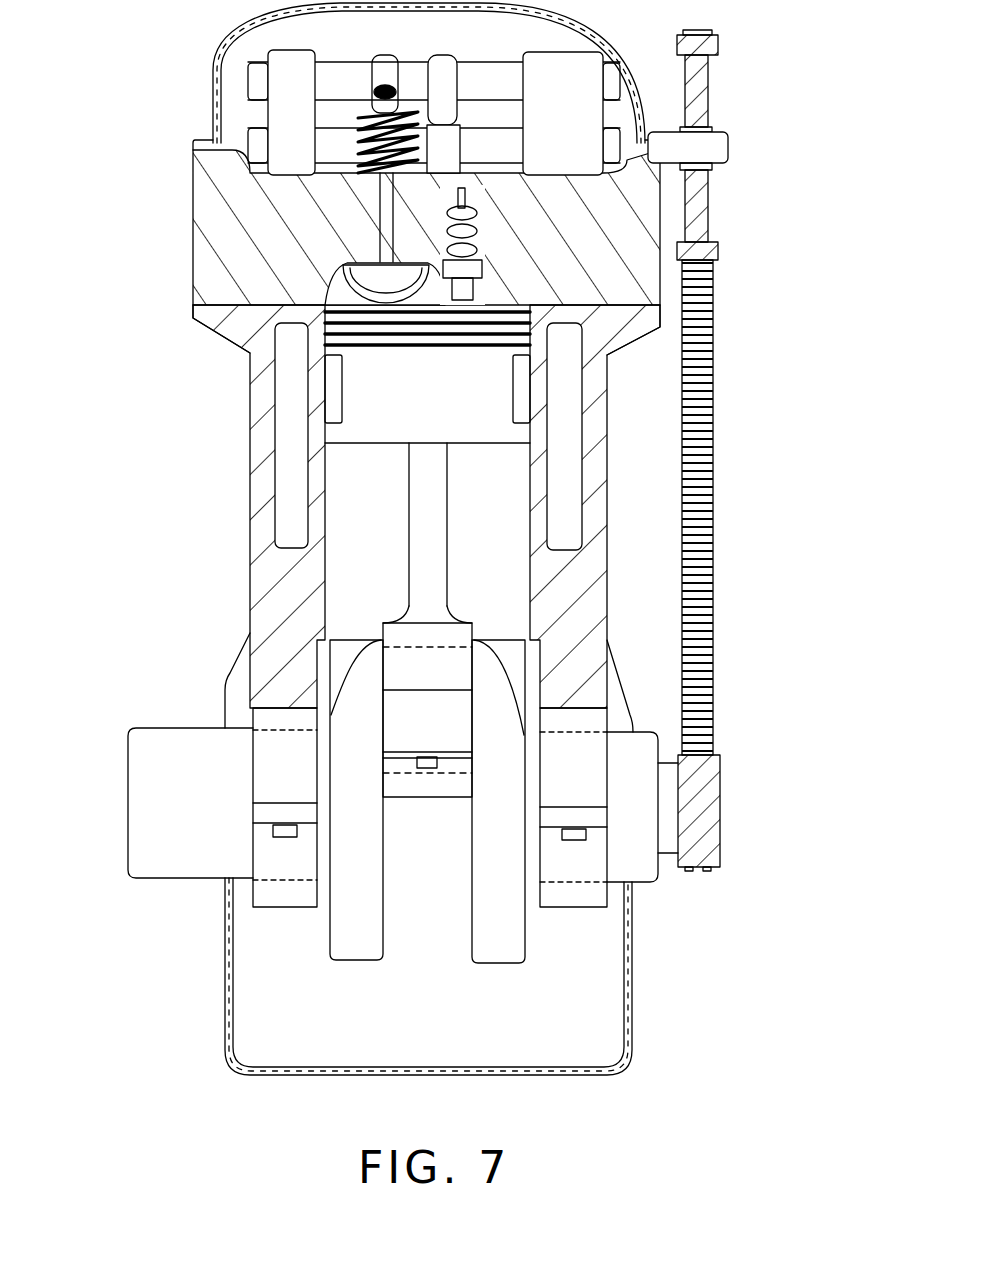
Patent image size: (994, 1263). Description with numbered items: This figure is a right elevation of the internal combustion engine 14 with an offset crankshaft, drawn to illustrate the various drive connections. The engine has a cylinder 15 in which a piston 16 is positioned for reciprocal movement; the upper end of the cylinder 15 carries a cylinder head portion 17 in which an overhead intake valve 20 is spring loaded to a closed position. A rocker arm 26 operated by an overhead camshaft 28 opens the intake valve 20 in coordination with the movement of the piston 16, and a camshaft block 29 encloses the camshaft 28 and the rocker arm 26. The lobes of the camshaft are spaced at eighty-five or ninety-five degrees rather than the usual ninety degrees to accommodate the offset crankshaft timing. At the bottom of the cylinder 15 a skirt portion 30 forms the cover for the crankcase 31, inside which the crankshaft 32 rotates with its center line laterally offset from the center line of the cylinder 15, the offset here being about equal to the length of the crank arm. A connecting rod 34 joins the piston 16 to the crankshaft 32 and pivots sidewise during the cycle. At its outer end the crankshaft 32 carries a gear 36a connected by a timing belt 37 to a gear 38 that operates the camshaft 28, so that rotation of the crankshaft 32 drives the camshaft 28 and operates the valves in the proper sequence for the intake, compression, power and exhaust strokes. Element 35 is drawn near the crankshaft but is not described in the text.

The internal combustion engine 14 is at (232, 583).
The cylinder 15 is at (325, 415).
The piston 16 is at (392, 430).
The cylinder head portion 17 is at (210, 233).
The overhead intake valve 20 is at (367, 257).
The rocker arm 26 is at (445, 85).
The camshaft 28 is at (486, 145).
The camshaft block 29 is at (220, 43).
The skirt portion 30 is at (240, 692).
The crankcase 31 is at (225, 992).
The crankshaft 32 is at (482, 972).
The connecting rod 34 is at (430, 566).
The crank web 35 is at (500, 730).
The gear 36a is at (705, 790).
The timing belt 37 is at (705, 480).
The gear 38 is at (703, 50).